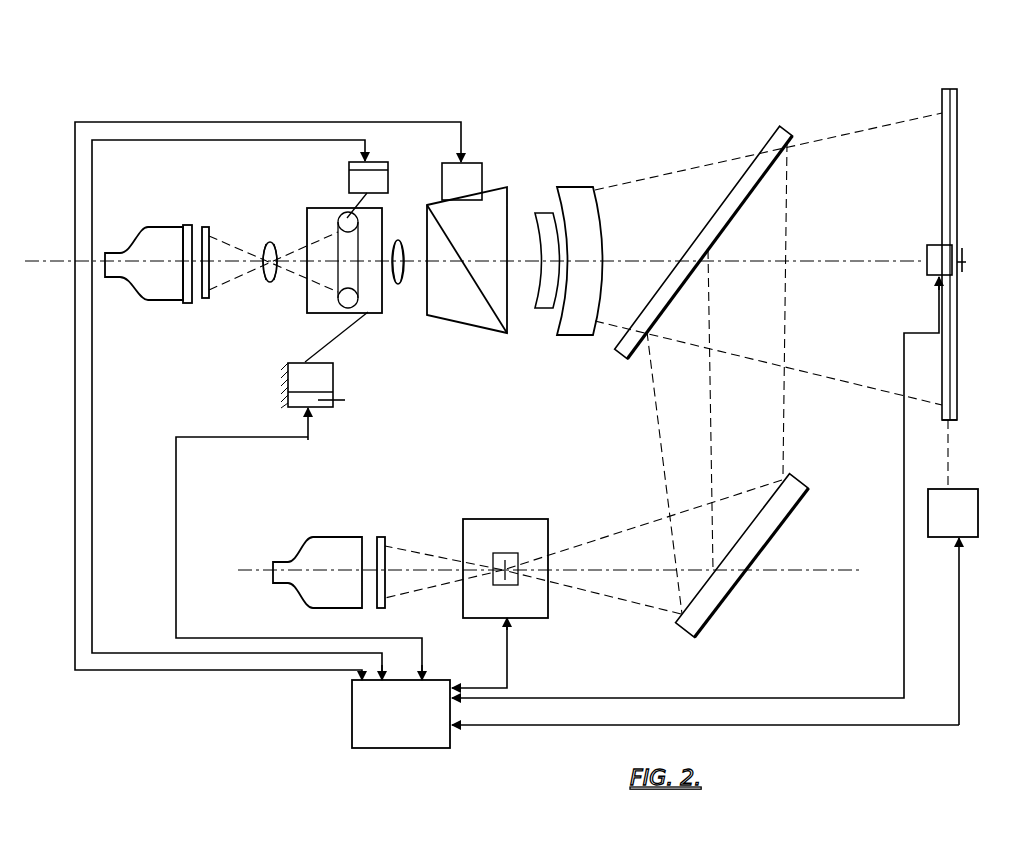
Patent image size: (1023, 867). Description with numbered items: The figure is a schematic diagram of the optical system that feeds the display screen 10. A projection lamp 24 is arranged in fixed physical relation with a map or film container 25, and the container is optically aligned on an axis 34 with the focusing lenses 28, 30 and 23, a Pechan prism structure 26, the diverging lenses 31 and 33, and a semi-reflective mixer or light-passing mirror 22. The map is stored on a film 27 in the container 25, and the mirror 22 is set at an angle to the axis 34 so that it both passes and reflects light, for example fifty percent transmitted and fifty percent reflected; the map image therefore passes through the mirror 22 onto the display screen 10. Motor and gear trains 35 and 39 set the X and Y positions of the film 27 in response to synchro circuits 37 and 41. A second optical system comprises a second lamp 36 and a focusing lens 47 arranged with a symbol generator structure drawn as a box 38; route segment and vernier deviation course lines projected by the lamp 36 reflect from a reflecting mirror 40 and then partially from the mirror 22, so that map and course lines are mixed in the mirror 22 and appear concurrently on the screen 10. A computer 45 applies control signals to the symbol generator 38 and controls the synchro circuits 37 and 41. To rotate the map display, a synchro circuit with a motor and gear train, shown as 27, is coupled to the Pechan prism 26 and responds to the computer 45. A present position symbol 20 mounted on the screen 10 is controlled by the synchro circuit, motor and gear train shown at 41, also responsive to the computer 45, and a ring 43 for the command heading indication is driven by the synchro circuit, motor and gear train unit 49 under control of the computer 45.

The display screen 10 is at (958, 216).
The present position symbol 20 is at (965, 252).
The mixer or light-passing mirror 22 is at (716, 213).
The focusing lens 23 is at (400, 238).
The projection lamp 24 is at (152, 240).
The map or film container 25 is at (306, 305).
The Pechan prism structure 26 is at (475, 322).
The film 27 is at (343, 250).
The focusing lens 28 is at (207, 228).
The focusing lens 30 is at (270, 243).
The diverging lens 31 is at (543, 213).
The diverging lens 33 is at (578, 189).
The axis 34 is at (485, 262).
The motor and gear train 35 is at (325, 364).
The second lamp 36 is at (323, 537).
The synchro circuit 37 is at (272, 419).
The symbol generator structure 38 is at (532, 519).
The motor and gear train 39 is at (349, 186).
The reflecting mirror 40 is at (723, 600).
The synchro circuit 41 is at (349, 168).
The ring 43 is at (950, 421).
The computer 45 is at (436, 744).
The focusing lens 47 is at (383, 537).
The synchro circuit, motor and gear train unit 49 is at (940, 535).